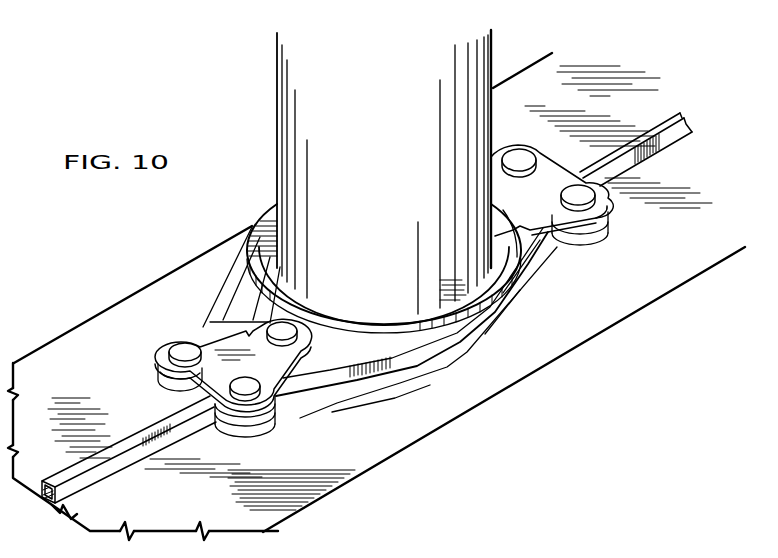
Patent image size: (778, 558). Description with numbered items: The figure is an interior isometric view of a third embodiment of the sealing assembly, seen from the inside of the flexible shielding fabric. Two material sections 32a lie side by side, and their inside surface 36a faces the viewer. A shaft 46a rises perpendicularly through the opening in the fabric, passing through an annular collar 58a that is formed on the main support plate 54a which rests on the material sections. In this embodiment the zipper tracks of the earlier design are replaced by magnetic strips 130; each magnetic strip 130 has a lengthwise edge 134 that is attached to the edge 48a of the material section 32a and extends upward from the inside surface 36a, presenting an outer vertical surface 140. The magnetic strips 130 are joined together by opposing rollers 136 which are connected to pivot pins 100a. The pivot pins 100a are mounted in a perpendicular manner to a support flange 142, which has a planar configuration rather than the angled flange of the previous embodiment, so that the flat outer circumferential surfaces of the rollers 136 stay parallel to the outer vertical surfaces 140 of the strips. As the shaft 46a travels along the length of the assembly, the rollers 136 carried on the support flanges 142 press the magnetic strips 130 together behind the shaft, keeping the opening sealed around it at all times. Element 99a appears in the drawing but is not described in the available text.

The material section 32a is at (80, 325).
The inside surface 36a is at (602, 320).
The shaft 46a is at (405, 176).
The edge 48a is at (657, 158).
The main support plate 54a is at (258, 295).
The annular collar 58a is at (267, 222).
The base plate wing 99a is at (267, 327).
The pivot pin 100a is at (273, 392).
The magnetic strip 130 is at (111, 476).
The lengthwise edge 134 is at (120, 452).
The roller 136 is at (158, 375).
The outer vertical surface 140 is at (133, 448).
The support flange 142 is at (190, 341).